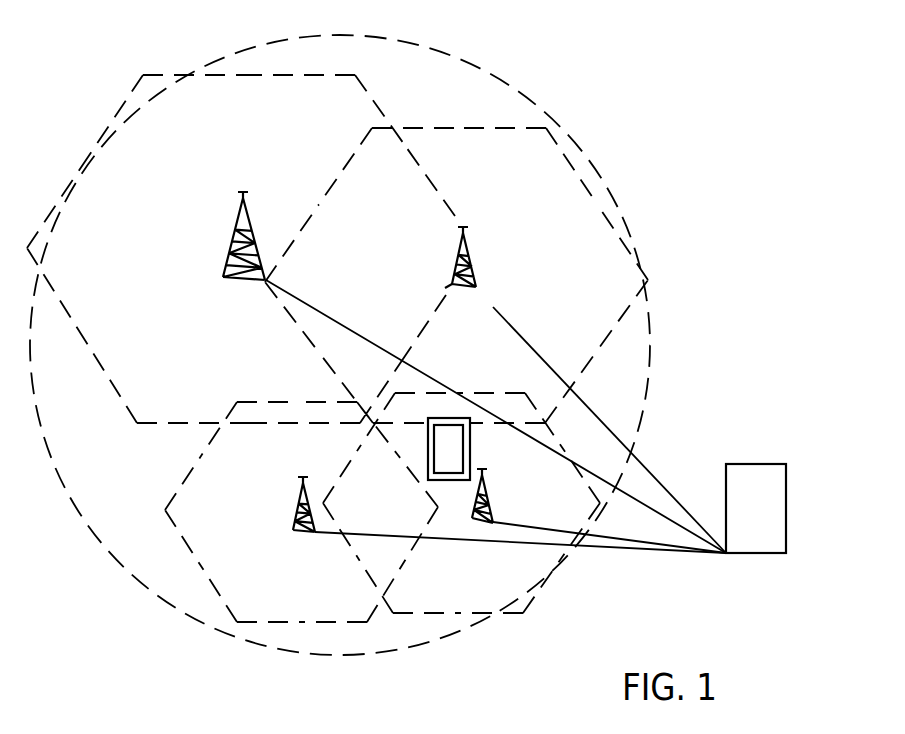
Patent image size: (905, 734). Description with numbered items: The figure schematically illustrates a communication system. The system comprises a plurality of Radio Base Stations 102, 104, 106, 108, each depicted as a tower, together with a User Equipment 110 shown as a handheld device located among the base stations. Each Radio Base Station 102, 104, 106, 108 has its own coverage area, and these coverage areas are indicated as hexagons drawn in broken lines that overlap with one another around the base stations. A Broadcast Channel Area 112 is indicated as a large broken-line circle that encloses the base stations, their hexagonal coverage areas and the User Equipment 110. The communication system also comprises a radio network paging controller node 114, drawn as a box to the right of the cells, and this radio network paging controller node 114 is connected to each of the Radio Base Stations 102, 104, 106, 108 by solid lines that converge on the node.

The Radio Base Station 102 is at (224, 276).
The Radio Base Station 104 is at (478, 289).
The Radio Base Station 106 is at (292, 532).
The Radio Base Station 108 is at (467, 520).
The User Equipment 110 is at (470, 447).
The Broadcast Channel Area 112 is at (650, 347).
The radio network paging controller node 114 is at (786, 508).